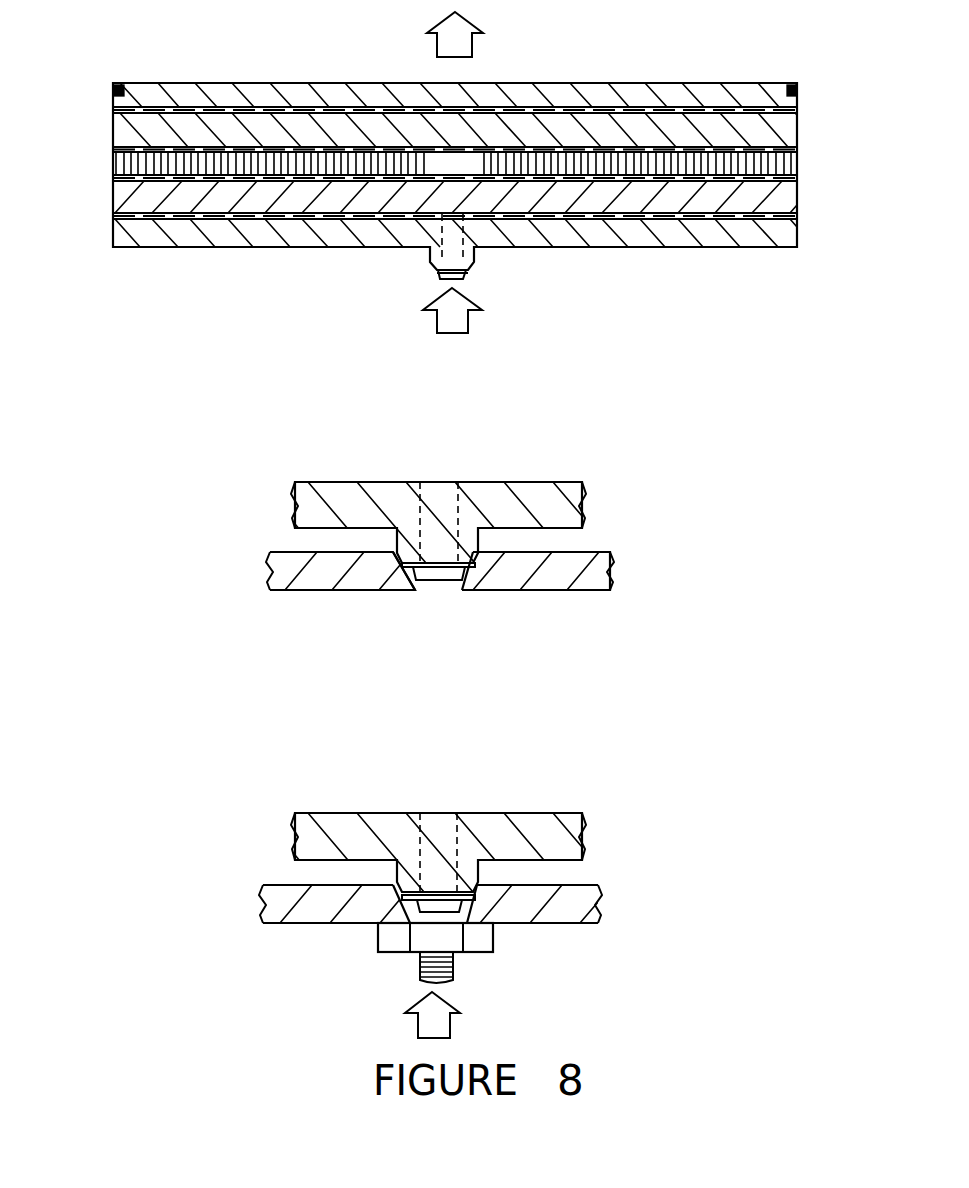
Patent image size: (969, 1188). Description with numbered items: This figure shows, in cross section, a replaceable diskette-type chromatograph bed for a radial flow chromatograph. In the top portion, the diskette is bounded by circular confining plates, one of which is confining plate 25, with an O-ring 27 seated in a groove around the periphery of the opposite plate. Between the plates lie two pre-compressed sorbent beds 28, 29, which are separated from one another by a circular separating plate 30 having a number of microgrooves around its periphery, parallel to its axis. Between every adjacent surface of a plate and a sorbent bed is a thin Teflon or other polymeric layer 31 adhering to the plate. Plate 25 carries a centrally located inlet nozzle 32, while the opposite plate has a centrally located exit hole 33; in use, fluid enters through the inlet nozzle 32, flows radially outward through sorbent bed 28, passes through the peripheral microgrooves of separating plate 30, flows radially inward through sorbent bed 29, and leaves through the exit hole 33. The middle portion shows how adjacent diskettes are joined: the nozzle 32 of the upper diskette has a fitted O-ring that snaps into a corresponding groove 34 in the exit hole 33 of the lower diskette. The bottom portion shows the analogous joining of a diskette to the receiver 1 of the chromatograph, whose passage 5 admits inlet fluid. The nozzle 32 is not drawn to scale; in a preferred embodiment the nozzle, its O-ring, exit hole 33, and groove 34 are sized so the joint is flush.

The receiver 1 is at (560, 905).
The passage 5 is at (418, 968).
The circular confining plate 25 is at (280, 230).
The O-ring 27 is at (113, 92).
The pre-compressed sorbent bed 28 is at (135, 196).
The pre-compressed sorbent bed 29 is at (633, 132).
The circular separating plate 30 is at (445, 160).
The polymeric layer 31 is at (113, 108).
The inlet nozzle 32 is at (473, 263).
The exit hole 33 is at (462, 90).
The groove 34 is at (400, 578).